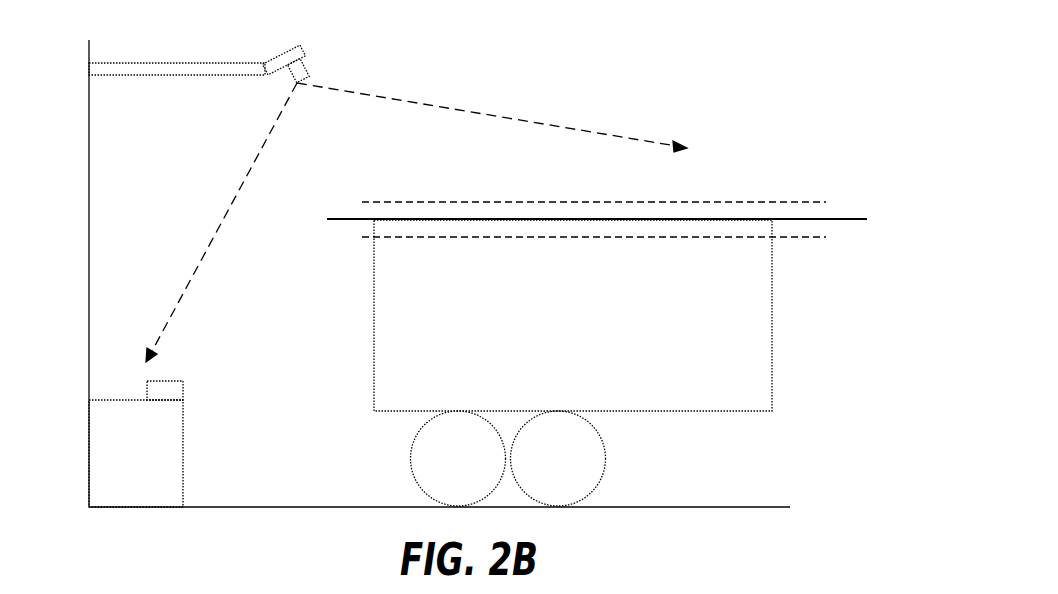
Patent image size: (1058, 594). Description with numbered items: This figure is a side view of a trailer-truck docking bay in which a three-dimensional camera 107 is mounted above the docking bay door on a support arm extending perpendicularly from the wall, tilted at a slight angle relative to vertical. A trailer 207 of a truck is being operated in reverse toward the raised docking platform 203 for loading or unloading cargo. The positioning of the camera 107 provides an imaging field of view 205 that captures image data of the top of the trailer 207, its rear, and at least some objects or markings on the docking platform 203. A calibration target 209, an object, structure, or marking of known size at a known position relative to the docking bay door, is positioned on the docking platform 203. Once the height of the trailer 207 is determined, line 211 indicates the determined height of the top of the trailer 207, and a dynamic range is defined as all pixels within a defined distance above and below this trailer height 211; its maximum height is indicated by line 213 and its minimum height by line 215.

The 3D camera 107 is at (291, 67).
The docking platform 203 is at (89, 435).
The imaging field of view 205 is at (448, 109).
The trailer 207 is at (382, 363).
The calibration target 209 is at (183, 388).
The trailer height line 211 is at (851, 219).
The maximum height line of dynamic range 213 is at (775, 201).
The minimum height line of dynamic range 215 is at (812, 239).